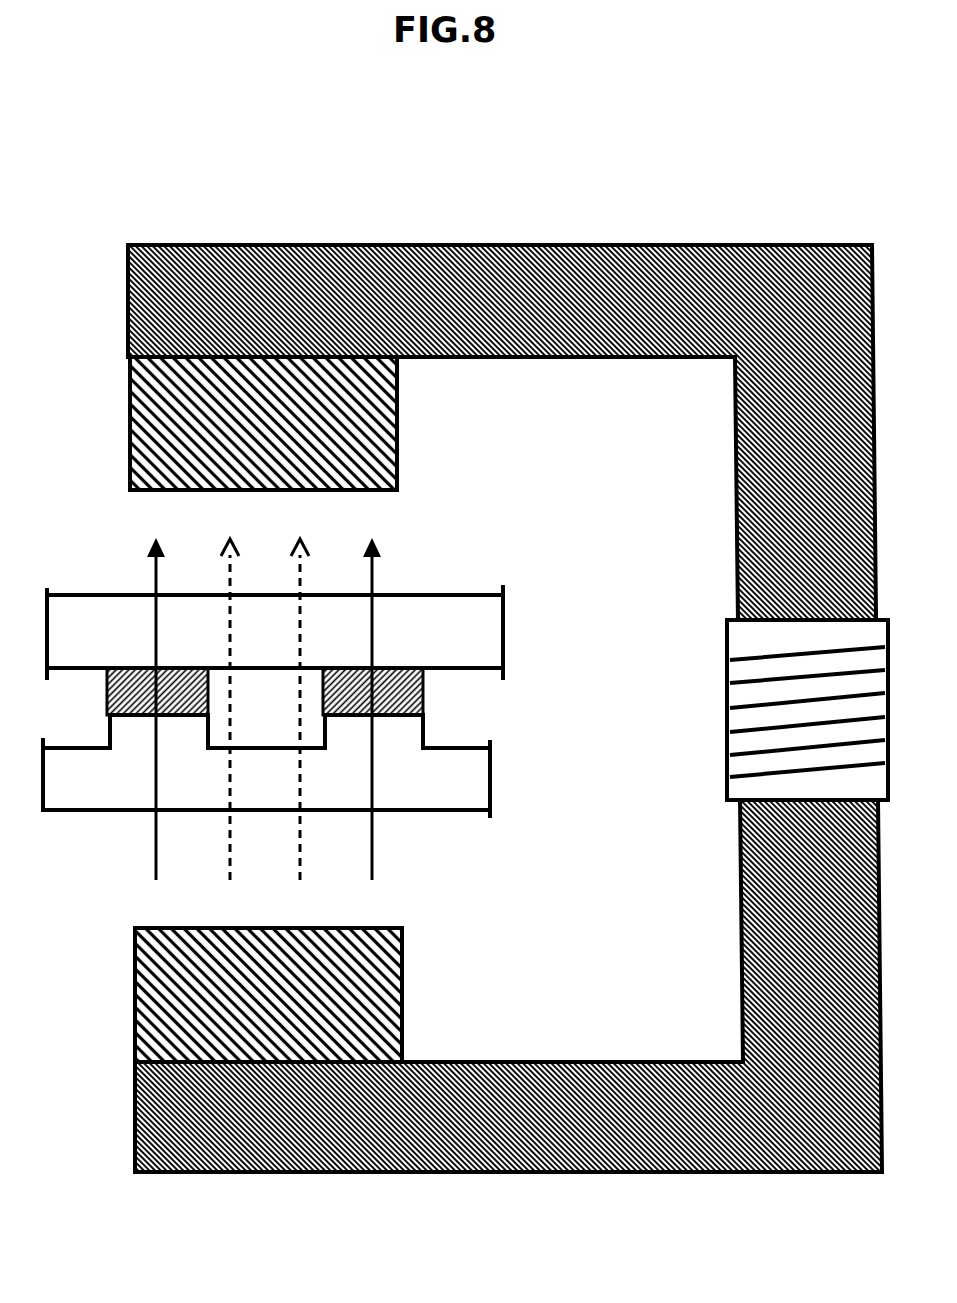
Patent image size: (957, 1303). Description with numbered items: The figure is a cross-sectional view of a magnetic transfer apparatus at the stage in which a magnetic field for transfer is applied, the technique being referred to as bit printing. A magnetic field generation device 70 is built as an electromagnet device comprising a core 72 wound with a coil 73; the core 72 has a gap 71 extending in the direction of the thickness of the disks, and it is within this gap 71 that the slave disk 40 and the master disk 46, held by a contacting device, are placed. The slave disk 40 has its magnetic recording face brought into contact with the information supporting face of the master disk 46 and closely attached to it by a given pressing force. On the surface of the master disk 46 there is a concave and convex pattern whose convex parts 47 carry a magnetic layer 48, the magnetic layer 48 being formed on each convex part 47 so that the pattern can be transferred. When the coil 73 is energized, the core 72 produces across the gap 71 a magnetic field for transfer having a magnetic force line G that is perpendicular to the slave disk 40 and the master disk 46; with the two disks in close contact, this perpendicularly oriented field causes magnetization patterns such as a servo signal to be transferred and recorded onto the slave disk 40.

The magnetic field generation device 70 is at (508, 618).
The gap 71 is at (403, 907).
The core 72 is at (343, 245).
The coil 73 is at (727, 790).
The slave disk 40 is at (483, 593).
The master disk 46 is at (351, 711).
The convex part 47 is at (475, 812).
The magnetic layer 48 is at (133, 718).
The magnetic force line G is at (153, 572).